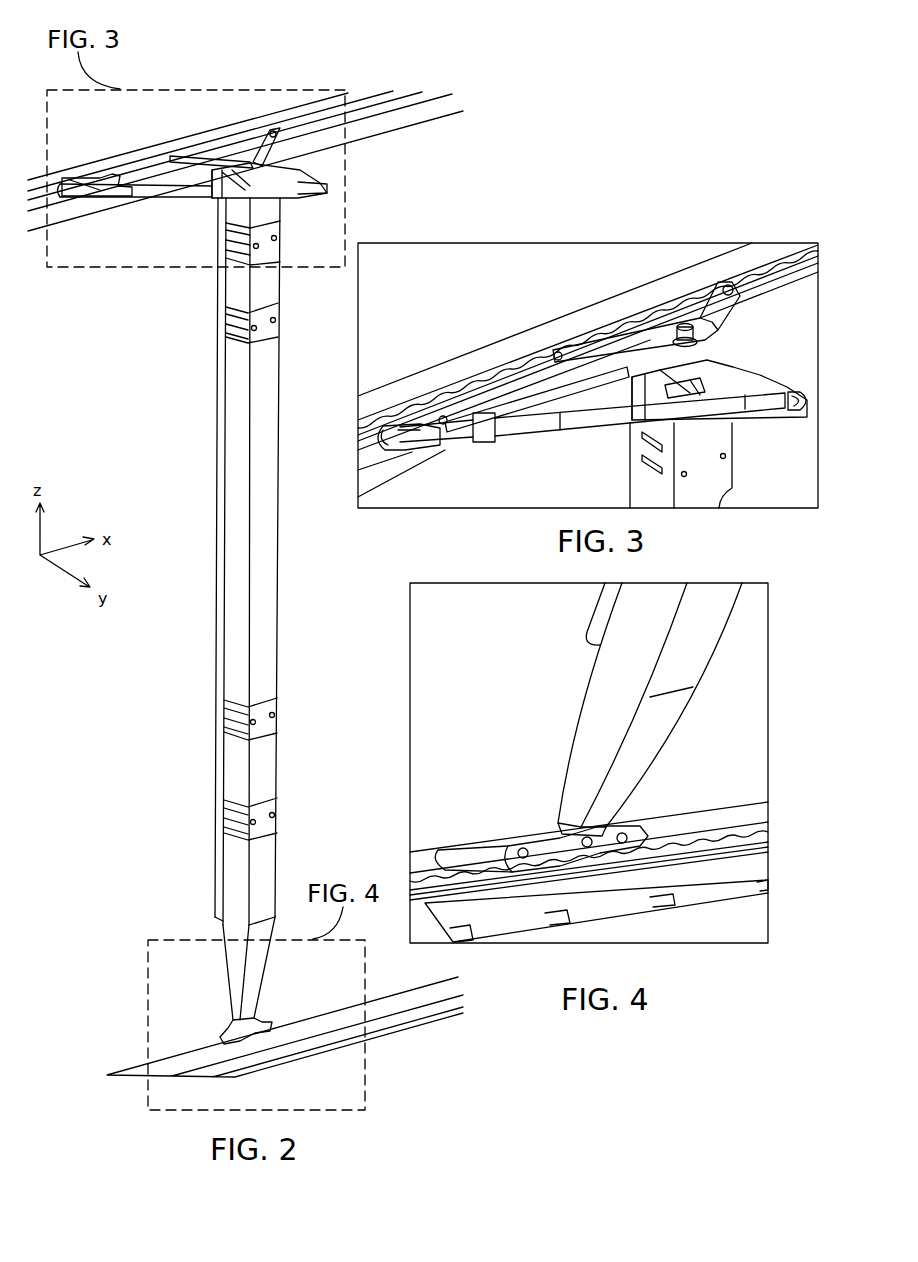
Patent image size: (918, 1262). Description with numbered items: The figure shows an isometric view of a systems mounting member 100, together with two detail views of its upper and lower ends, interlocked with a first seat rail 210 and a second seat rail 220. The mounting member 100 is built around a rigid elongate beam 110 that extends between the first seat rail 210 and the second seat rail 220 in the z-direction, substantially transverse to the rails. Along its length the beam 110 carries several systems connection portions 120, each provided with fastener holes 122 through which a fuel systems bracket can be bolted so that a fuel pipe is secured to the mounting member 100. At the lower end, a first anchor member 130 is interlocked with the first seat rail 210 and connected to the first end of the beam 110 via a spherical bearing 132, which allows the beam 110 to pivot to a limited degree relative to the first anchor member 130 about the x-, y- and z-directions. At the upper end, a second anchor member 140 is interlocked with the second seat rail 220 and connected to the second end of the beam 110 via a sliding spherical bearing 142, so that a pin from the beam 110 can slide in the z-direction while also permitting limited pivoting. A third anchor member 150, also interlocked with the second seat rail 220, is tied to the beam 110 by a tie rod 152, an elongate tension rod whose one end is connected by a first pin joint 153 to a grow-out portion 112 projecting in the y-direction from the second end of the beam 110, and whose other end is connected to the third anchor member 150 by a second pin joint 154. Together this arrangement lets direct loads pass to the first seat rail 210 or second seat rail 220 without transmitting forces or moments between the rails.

In FIG. 2, the mounting member 100 is at (150, 364).
In FIG. 2, the rigid elongate beam 110 is at (265, 510).
In FIG. 3, the rigid elongate beam 110 is at (722, 457).
In FIG. 4, the rigid elongate beam 110 is at (698, 650).
In FIG. 2, the grow-out portion 112 is at (269, 180).
In FIG. 3, the grow-out portion 112 is at (755, 378).
In FIG. 2, the systems connection portions 120 is at (258, 227).
In FIG. 2, the fastener holes 122 is at (278, 239).
In FIG. 2, the first anchor member 130 is at (246, 1031).
In FIG. 4, the first anchor member 130 is at (552, 840).
In FIG. 4, the spherical bearing 132 is at (605, 828).
In FIG. 2, the second anchor member 140 is at (225, 148).
In FIG. 3, the second anchor member 140 is at (715, 308).
In FIG. 3, the sliding spherical bearing 142 is at (703, 338).
In FIG. 3, the third anchor member 150 is at (432, 412).
In FIG. 2, the tie rod 152 is at (193, 189).
In FIG. 3, the tie rod 152 is at (550, 424).
In FIG. 3, the first pin joint 153 is at (793, 396).
In FIG. 2, the second pin joint 154 is at (97, 185).
In FIG. 3, the second pin joint 154 is at (440, 438).
In FIG. 2, the first seat rail 210 is at (380, 1037).
In FIG. 4, the first seat rail 210 is at (702, 820).
In FIG. 2, the second seat rail 220 is at (287, 107).
In FIG. 3, the second seat rail 220 is at (632, 283).